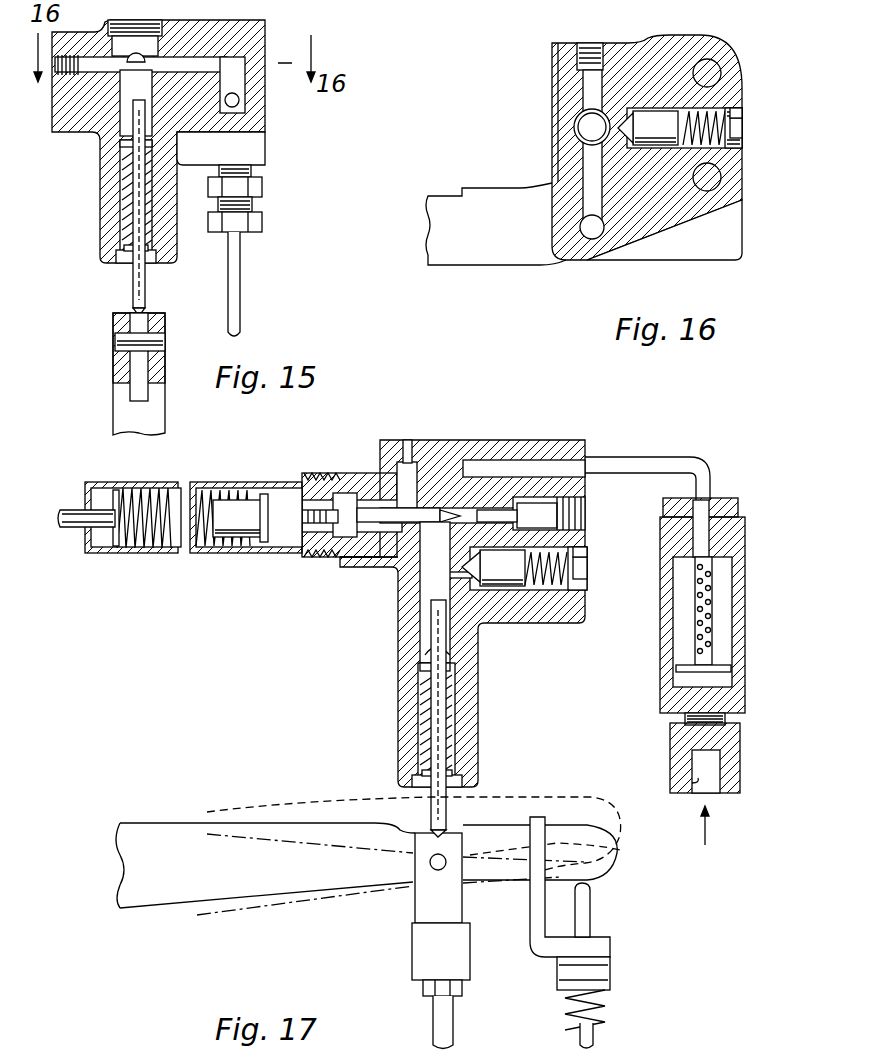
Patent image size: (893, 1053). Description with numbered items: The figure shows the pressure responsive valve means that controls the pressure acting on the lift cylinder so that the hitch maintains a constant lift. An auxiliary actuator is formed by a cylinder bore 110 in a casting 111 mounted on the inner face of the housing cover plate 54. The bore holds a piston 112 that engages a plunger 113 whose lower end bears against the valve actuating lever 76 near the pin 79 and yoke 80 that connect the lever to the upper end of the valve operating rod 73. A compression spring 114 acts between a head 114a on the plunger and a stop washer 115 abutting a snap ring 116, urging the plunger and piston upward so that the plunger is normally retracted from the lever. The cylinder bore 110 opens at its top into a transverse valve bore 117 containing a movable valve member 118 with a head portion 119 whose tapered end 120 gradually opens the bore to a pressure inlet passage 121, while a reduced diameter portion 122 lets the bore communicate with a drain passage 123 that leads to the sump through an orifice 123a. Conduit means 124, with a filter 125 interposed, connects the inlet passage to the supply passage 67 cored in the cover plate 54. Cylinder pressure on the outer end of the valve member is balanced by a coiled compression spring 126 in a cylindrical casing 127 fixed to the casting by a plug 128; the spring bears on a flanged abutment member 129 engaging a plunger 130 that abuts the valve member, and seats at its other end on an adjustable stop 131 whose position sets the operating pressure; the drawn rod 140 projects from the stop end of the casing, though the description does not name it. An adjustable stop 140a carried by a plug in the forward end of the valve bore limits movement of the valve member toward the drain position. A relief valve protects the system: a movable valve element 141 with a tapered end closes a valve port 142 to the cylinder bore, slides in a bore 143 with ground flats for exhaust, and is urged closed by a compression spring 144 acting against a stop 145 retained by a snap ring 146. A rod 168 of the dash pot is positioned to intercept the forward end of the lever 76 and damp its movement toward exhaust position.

In FIG. 15, the cylinder bore 110 is at (125, 142).
In FIG. 16, the cylinder bore 110 is at (577, 127).
In FIG. 17, the cylinder bore 110 is at (425, 645).
In FIG. 15, the casting 111 is at (100, 207).
In FIG. 16, the casting 111 is at (565, 170).
In FIG. 17, the casting 111 is at (400, 700).
In FIG. 15, the piston 112 is at (150, 133).
In FIG. 16, the piston 112 is at (588, 118).
In FIG. 17, the piston 112 is at (448, 650).
In FIG. 15, the plunger 113 is at (146, 291).
In FIG. 17, the plunger 113 is at (446, 810).
In FIG. 15, the compression spring 114 is at (125, 230).
In FIG. 17, the compression spring 114 is at (452, 728).
In FIG. 15, the head 114a is at (122, 166).
In FIG. 17, the head 114a is at (452, 672).
In FIG. 15, the stop washer 115 is at (160, 256).
In FIG. 17, the stop washer 115 is at (458, 783).
In FIG. 15, the snap ring 116 is at (120, 258).
In FIG. 17, the snap ring 116 is at (412, 783).
In FIG. 17, the transverse valve bore 117 is at (448, 510).
In FIG. 17, the movable valve member 118 is at (370, 503).
In FIG. 17, the head portion 119 is at (418, 507).
In FIG. 17, the tapered end 120 is at (480, 512).
In FIG. 15, the pressure inlet passage 121 is at (240, 95).
In FIG. 16, the pressure inlet passage 121 is at (592, 240).
In FIG. 17, the pressure inlet passage 121 is at (520, 462).
In FIG. 17, the reduced diameter portion 122 is at (369, 569).
In FIG. 17, the drain passage 123 is at (400, 498).
In FIG. 17, the orifice 123a is at (407, 440).
In FIG. 15, the conduit means 124 is at (238, 322).
In FIG. 17, the conduit means 124 is at (622, 462).
In FIG. 17, the filter 125 is at (745, 622).
In FIG. 17, the coiled compression spring 126 is at (165, 553).
In FIG. 17, the cylindrical casing 127 is at (213, 553).
In FIG. 17, the plug 128 is at (295, 553).
In FIG. 17, the flanged abutment member 129 is at (238, 537).
In FIG. 17, the plunger 130 is at (320, 535).
In FIG. 17, the adjustable stop 131 is at (116, 553).
In FIG. 17, the rod 140 is at (72, 530).
In FIG. 17, the adjustable stop 140a is at (497, 523).
In FIG. 16, the movable valve element 141 is at (665, 110).
In FIG. 17, the movable valve element 141 is at (530, 590).
In FIG. 16, the valve port 142 is at (623, 112).
In FIG. 17, the valve port 142 is at (462, 575).
In FIG. 16, the bore 143 is at (735, 145).
In FIG. 17, the bore 143 is at (580, 578).
In FIG. 16, the compression spring 144 is at (725, 140).
In FIG. 17, the compression spring 144 is at (560, 585).
In FIG. 16, the stop 145 is at (745, 121).
In FIG. 17, the stop 145 is at (588, 556).
In FIG. 16, the snap ring 146 is at (735, 108).
In FIG. 17, the snap ring 146 is at (570, 548).
In FIG. 15, the valve actuating lever 76 is at (133, 310).
In FIG. 17, the valve actuating lever 76 is at (190, 895).
In FIG. 15, the pin 79 is at (118, 345).
In FIG. 17, the pin 79 is at (430, 862).
In FIG. 15, the yoke 80 is at (118, 408).
In FIG. 17, the yoke 80 is at (425, 942).
In FIG. 17, the valve operating rod 73 is at (440, 1025).
In FIG. 17, the rod 168 is at (592, 928).
In FIG. 17, the supply passage 67 is at (692, 783).
In FIG. 17, the housing cover plate 54 is at (742, 785).